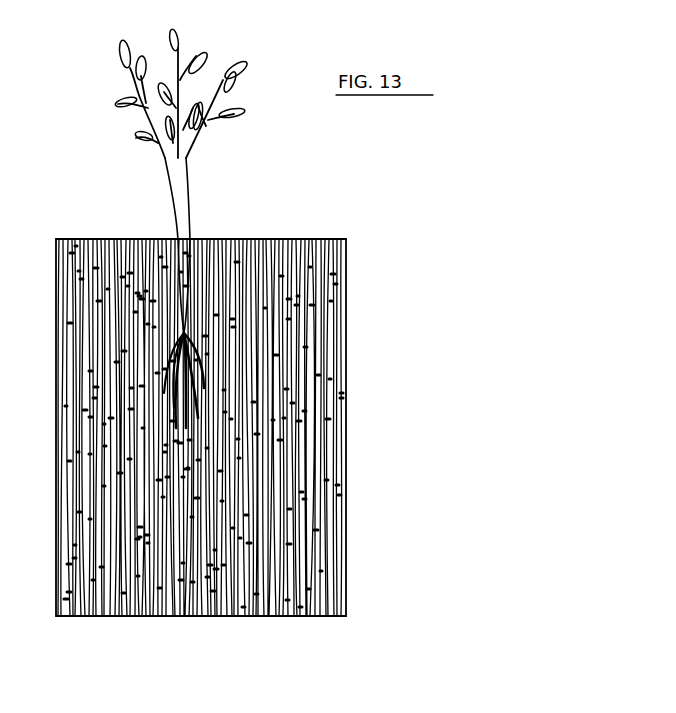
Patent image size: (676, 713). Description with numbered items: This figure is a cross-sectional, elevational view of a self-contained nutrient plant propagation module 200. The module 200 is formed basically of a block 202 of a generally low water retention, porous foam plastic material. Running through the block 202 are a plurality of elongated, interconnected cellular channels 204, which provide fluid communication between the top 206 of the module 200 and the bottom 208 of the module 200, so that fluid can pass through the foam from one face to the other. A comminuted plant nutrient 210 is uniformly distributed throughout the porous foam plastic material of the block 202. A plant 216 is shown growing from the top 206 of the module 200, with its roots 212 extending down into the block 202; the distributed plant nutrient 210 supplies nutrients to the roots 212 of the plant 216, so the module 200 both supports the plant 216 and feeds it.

The self-contained nutrient plant propagation module 200 is at (248, 337).
The block 202 is at (230, 426).
The elongated, interconnected cellular channels 204 is at (325, 460).
The top 206 is at (253, 231).
The bottom 208 is at (240, 608).
The comminuted plant nutrient 210 is at (196, 386).
The roots 212 is at (162, 371).
The plant 216 is at (184, 160).